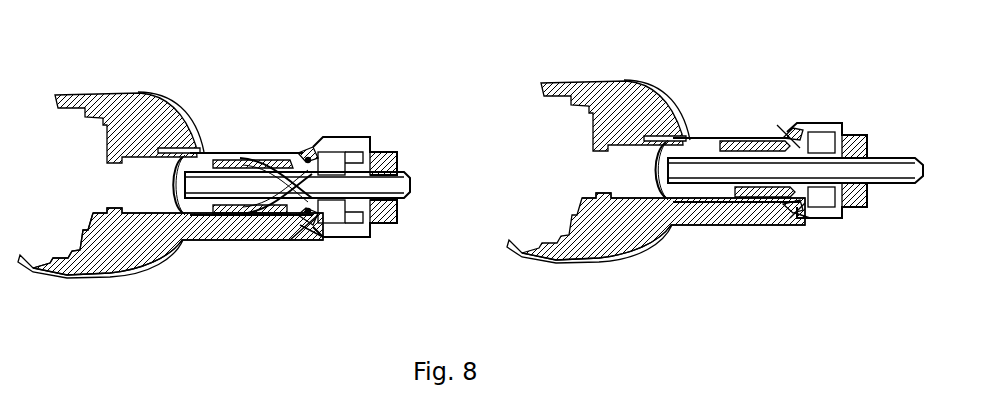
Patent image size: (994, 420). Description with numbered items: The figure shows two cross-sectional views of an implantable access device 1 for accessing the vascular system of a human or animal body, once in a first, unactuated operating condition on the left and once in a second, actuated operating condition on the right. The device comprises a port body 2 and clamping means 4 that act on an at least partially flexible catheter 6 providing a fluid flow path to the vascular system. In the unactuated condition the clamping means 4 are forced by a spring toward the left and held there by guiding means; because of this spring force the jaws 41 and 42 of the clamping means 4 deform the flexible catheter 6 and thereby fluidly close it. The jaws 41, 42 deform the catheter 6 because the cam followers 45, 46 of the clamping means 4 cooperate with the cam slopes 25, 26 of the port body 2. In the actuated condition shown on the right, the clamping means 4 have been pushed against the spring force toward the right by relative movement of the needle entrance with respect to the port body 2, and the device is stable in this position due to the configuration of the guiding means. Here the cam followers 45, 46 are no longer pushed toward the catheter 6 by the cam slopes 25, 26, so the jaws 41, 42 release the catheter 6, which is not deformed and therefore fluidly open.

The implantable access device 1 is at (205, 248).
The port body 2 is at (117, 108).
The clamping means 4 is at (245, 160).
The catheter 6 is at (407, 175).
The cam slope 25 is at (317, 150).
The cam slope 26 is at (318, 222).
The jaw 41 is at (296, 170).
The jaw 42 is at (297, 214).
The cam follower 45 is at (303, 153).
The cam follower 46 is at (313, 214).